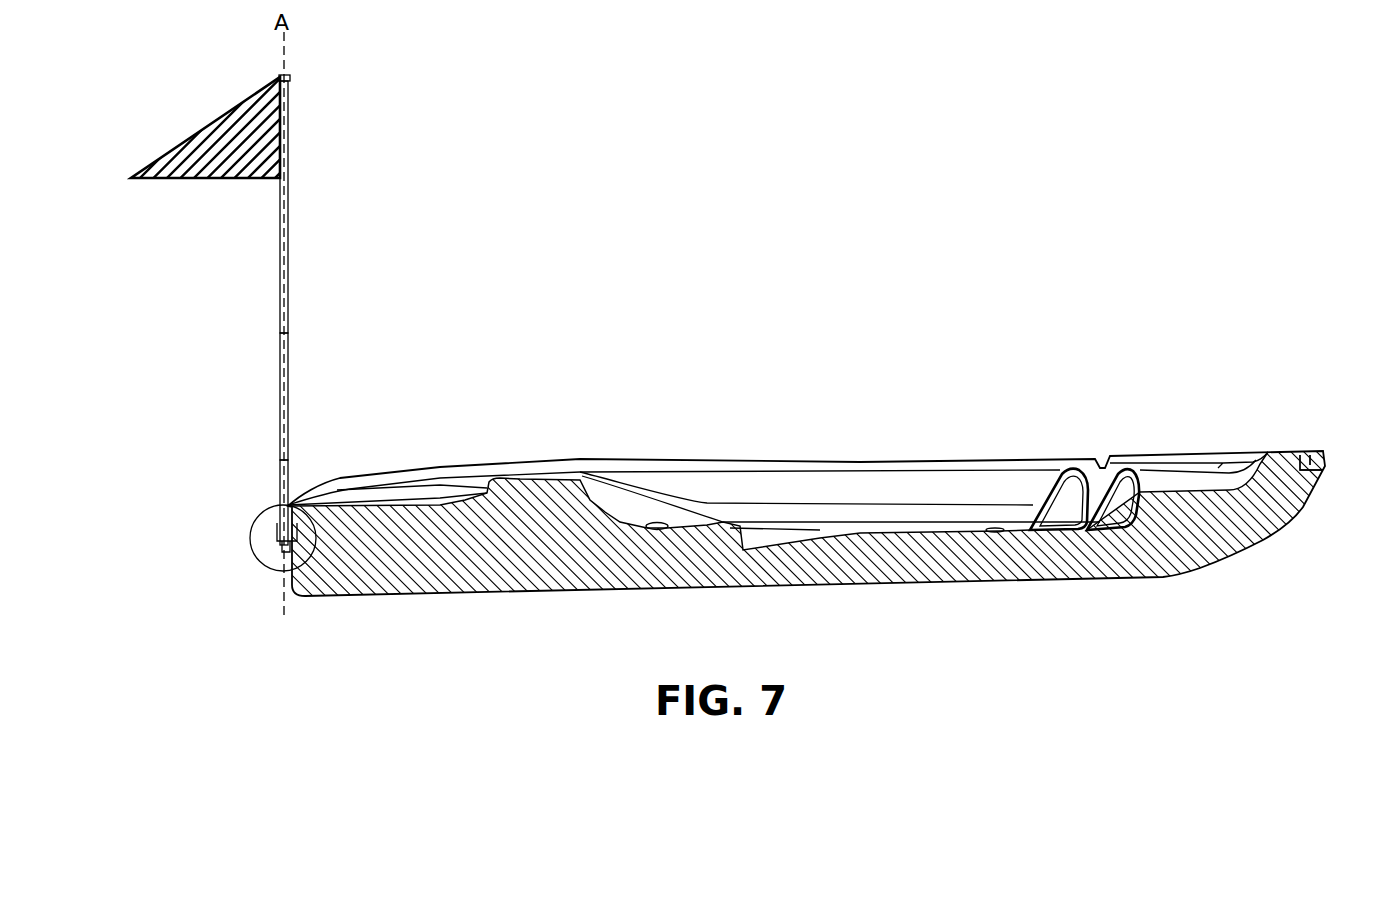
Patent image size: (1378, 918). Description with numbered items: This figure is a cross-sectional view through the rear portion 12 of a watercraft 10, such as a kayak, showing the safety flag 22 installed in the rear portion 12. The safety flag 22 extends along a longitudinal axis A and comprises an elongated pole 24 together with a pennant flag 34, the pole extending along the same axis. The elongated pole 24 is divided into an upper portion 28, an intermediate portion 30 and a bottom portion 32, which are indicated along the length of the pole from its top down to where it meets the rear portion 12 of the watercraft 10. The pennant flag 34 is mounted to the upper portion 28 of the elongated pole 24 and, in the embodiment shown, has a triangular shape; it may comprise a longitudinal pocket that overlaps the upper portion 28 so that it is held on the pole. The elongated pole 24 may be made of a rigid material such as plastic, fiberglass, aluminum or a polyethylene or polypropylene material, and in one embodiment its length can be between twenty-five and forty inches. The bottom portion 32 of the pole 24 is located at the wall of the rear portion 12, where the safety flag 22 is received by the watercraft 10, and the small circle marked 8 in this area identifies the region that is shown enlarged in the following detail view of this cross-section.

The detail view circle 8 is at (253, 556).
The watercraft 10 is at (553, 360).
The rear portion 12 is at (420, 562).
The safety flag 22 is at (242, 58).
The elongated pole 24 is at (257, 311).
The upper portion 28 is at (303, 78).
The intermediate portion 30 is at (303, 337).
The bottom portion 32 is at (267, 463).
The pennant flag 34 is at (206, 128).